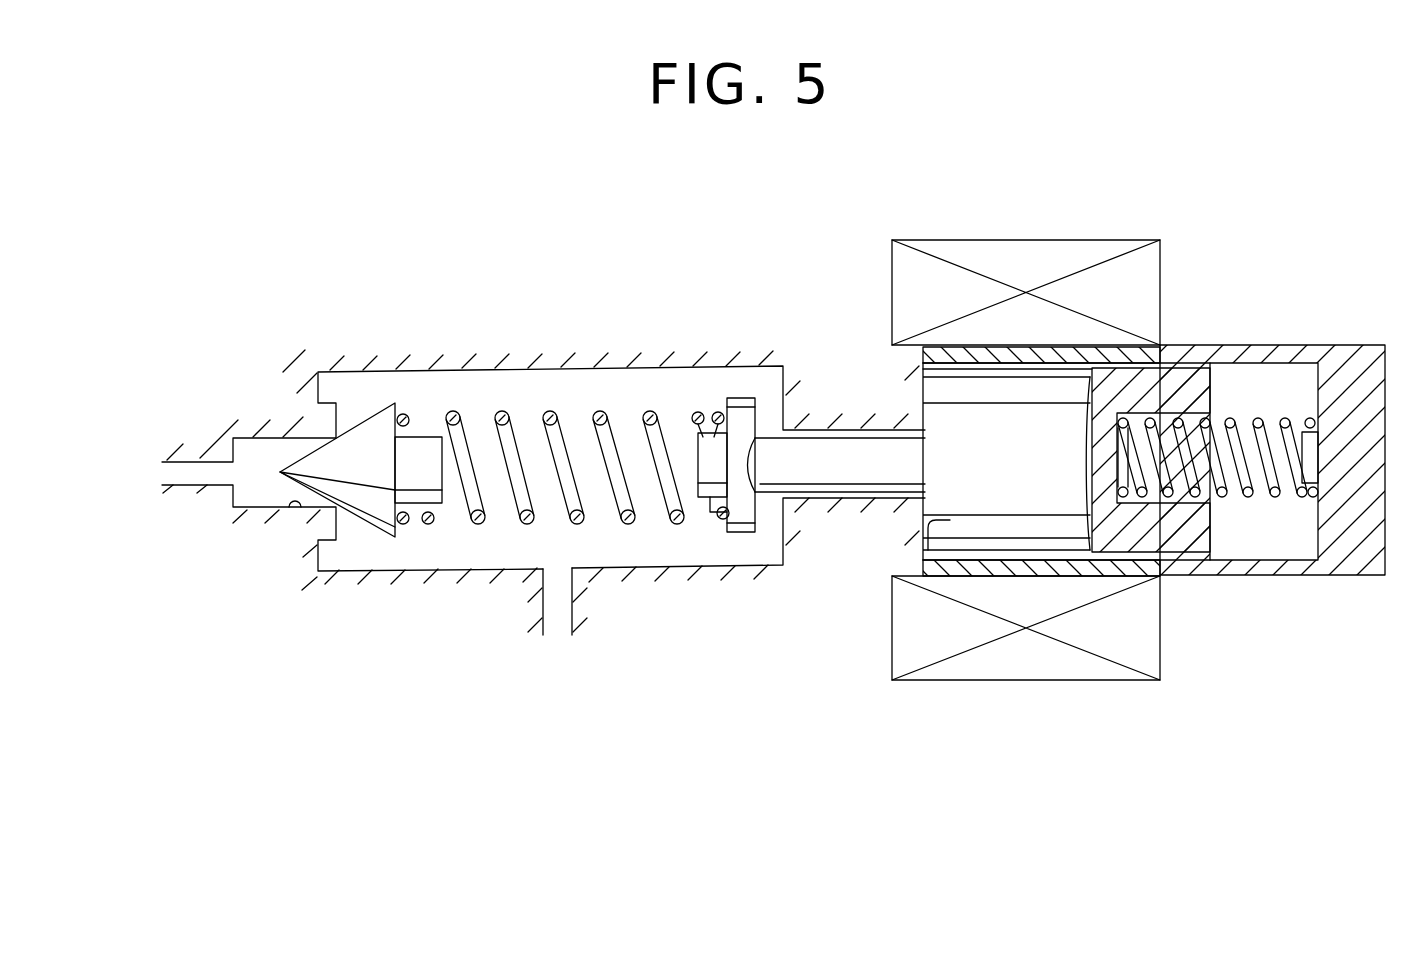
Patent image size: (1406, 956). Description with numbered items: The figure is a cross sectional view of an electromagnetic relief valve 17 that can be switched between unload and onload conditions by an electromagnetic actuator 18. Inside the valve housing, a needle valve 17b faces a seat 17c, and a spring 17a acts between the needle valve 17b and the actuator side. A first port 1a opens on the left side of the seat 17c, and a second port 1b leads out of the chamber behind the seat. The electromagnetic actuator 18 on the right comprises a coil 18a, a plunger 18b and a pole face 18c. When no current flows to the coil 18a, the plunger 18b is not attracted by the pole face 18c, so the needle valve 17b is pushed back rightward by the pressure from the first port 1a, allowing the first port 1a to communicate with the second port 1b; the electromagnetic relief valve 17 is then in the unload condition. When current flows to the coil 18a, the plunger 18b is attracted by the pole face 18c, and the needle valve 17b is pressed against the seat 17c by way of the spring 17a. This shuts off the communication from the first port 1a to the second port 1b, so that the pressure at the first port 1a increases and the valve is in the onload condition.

The electromagnetic relief valve 17 is at (453, 348).
The spring 17a is at (552, 413).
The needle valve 17b is at (370, 430).
The seat 17c is at (285, 500).
The electromagnetic actuator 18 is at (1237, 328).
The coil 18a is at (988, 247).
The plunger 18b is at (1050, 542).
The pole face 18c is at (932, 524).
The first port 1a is at (160, 475).
The second port 1b is at (558, 640).